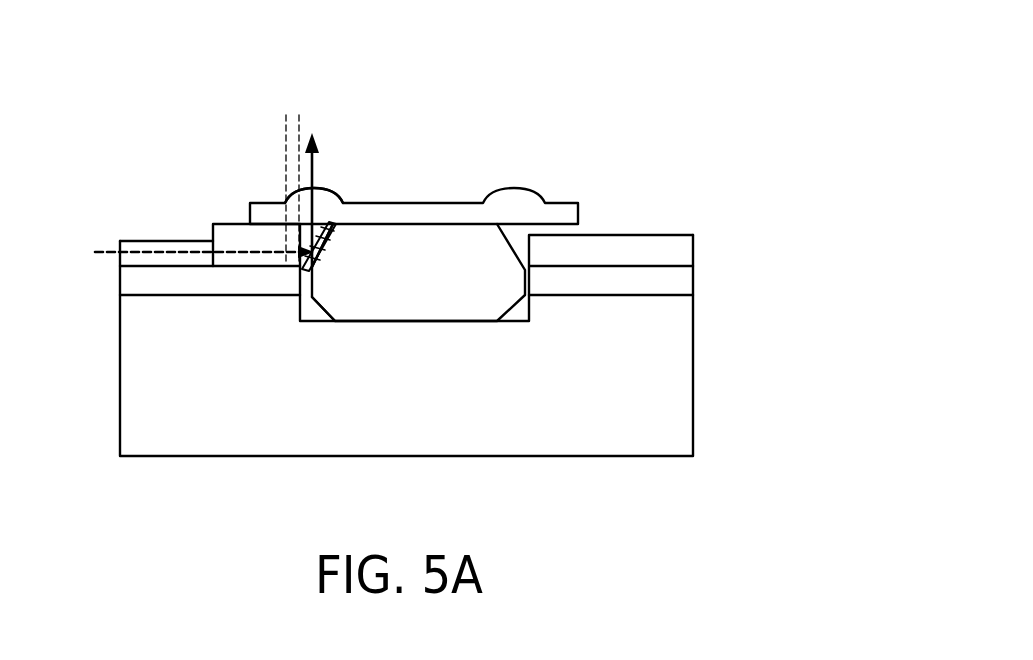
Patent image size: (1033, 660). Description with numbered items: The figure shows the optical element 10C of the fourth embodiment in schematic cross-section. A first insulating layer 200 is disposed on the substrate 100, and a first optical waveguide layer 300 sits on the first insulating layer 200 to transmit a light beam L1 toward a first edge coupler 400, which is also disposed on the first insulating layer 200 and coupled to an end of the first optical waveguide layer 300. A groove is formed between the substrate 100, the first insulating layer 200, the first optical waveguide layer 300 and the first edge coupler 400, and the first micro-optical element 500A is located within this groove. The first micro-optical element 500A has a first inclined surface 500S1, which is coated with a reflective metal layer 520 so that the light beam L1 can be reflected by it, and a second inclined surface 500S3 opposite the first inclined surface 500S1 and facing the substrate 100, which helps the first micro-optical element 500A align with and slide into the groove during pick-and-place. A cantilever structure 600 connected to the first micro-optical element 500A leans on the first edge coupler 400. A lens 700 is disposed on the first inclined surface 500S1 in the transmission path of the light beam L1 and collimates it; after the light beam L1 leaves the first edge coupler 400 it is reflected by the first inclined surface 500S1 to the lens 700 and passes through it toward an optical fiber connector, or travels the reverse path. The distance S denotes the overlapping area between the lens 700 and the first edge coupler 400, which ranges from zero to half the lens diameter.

The substrate 100 is at (137, 367).
The first insulating layer 200 is at (137, 278).
The first optical waveguide layer 300 is at (162, 245).
The first edge coupler 400 is at (227, 233).
The first micro-optical element 500A is at (438, 247).
The first inclined surface 500S1 is at (332, 242).
The second inclined surface 500S3 is at (335, 305).
The reflective metal layer 520 is at (300, 284).
The cantilever structure 600 is at (557, 215).
The lens 700 is at (327, 197).
The light beam L1 is at (97, 251).
The distance of overlapping area S is at (330, 111).
The optical element 10C is at (692, 518).